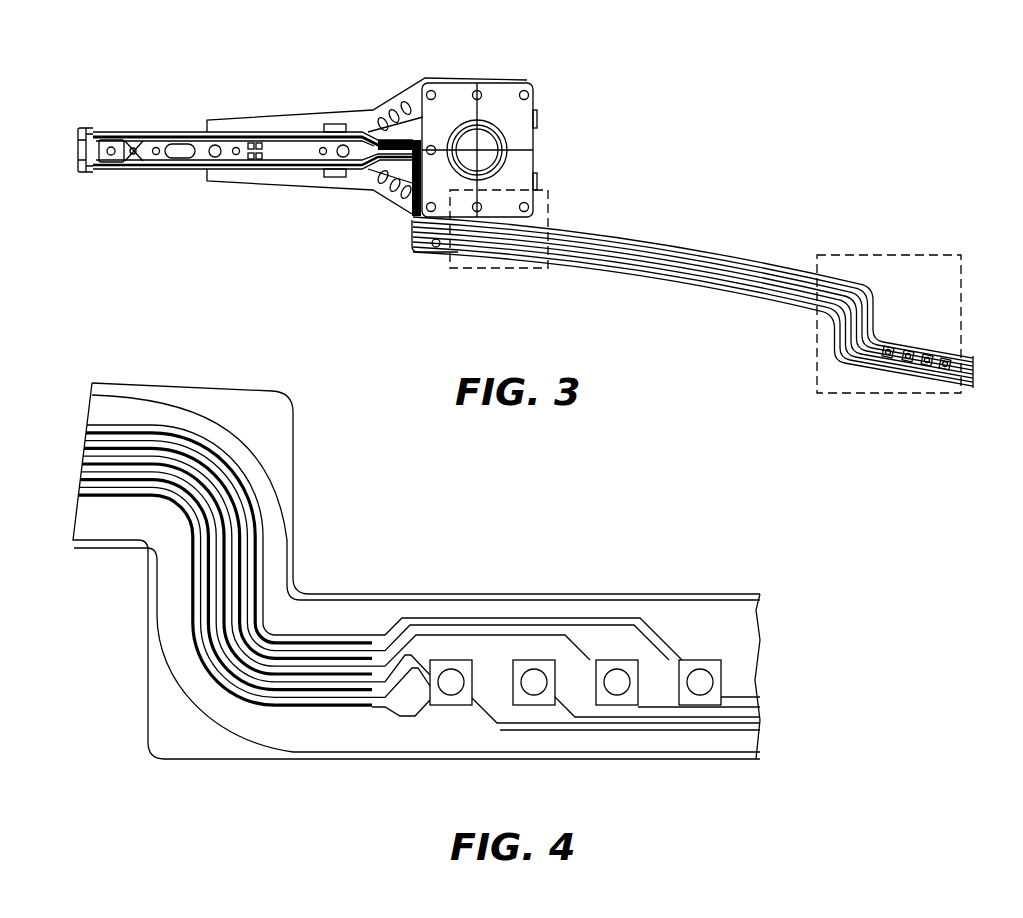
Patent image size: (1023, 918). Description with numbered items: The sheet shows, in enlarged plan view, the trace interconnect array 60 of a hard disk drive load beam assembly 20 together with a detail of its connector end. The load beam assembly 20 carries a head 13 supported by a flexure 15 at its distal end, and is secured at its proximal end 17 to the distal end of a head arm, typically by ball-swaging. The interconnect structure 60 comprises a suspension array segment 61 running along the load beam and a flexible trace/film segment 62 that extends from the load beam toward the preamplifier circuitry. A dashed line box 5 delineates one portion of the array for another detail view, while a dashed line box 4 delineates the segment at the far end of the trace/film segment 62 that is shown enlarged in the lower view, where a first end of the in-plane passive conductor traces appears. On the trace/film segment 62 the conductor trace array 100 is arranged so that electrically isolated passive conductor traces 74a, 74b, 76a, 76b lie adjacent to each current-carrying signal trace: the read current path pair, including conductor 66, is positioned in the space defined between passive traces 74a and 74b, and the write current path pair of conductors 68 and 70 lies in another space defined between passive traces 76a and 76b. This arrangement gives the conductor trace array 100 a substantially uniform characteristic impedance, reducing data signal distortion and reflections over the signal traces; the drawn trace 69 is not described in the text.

In FIG. 3, the conductor trace array 100 is at (721, 115).
In FIG. 3, the trace interconnect array 60 is at (350, 222).
In FIG. 3, the suspension array segment 61 is at (172, 206).
In FIG. 3, the load beam assembly 20 is at (285, 187).
In FIG. 3, the head 13 is at (100, 128).
In FIG. 3, the flexure 15 is at (153, 140).
In FIG. 3, the proximal end 17 is at (504, 83).
In FIG. 3, the flexible trace/film segment 62 is at (628, 295).
In FIG. 4, the flexible trace/film segment 62 is at (325, 449).
In FIG. 3, the dashed line box 5 is at (551, 207).
In FIG. 3, the dashed line box 4 is at (878, 255).
In FIG. 4, the passive conductor trace 76a is at (305, 640).
In FIG. 4, the passive conductor trace 76b is at (343, 670).
In FIG. 4, the passive conductor trace 74a is at (303, 707).
In FIG. 4, the passive conductor trace 74b is at (338, 678).
In FIG. 4, the conductor 66 is at (408, 658).
In FIG. 4, the conductor 68 is at (585, 647).
In FIG. 4, the conductor 70 is at (655, 633).
In FIG. 4, the conductive trace 69 is at (414, 712).